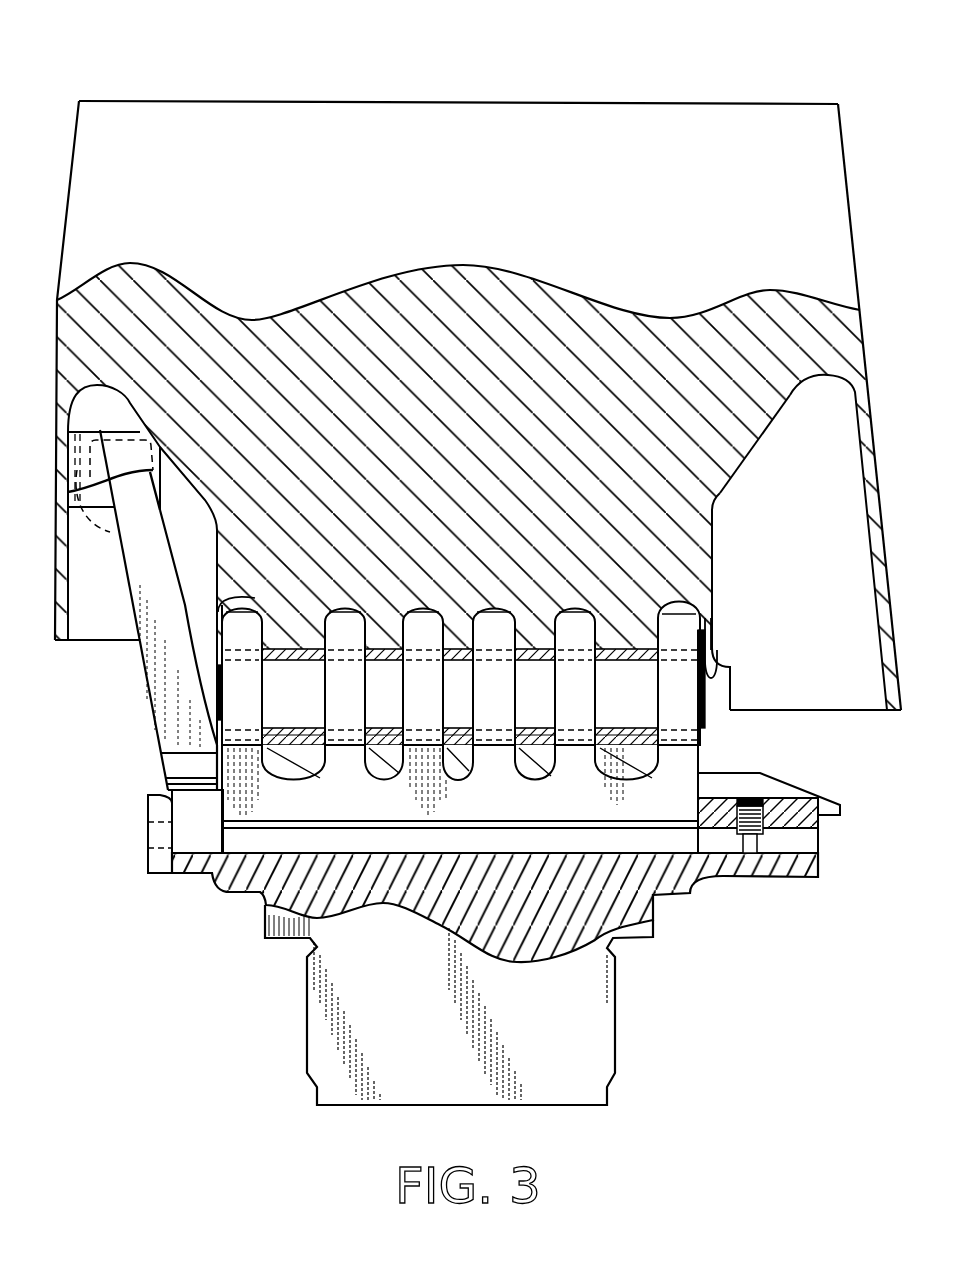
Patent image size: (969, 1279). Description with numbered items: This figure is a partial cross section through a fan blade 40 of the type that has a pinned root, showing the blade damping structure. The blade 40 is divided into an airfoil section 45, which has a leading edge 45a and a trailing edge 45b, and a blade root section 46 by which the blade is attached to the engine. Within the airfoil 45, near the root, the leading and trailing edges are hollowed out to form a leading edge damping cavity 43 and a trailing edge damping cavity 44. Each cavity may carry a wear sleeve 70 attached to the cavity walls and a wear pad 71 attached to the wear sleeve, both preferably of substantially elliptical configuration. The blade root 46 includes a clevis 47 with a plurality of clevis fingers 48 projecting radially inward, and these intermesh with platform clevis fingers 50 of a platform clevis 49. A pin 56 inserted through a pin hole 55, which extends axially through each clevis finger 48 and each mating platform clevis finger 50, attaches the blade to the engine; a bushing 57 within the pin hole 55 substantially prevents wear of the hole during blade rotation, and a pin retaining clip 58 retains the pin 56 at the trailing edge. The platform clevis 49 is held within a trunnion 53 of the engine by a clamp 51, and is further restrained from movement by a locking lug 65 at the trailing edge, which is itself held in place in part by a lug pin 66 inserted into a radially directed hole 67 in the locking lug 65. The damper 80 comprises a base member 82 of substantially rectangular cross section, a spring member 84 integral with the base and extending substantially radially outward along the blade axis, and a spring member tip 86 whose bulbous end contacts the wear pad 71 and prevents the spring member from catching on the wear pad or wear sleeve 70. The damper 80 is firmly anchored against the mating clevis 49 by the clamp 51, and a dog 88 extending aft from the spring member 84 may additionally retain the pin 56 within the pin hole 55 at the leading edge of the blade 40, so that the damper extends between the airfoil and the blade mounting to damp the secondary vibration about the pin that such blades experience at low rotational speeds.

The fan blade 40 is at (505, 164).
The leading edge damping cavity 43 is at (118, 612).
The trailing edge damping cavity 44 is at (846, 612).
The airfoil section 45 is at (74, 84).
The leading edge 45a is at (60, 262).
The trailing edge 45b is at (858, 290).
The blade root section 46 is at (726, 496).
The clevis 47 is at (640, 607).
The clevis fingers 48 is at (385, 757).
The platform clevis 49 is at (262, 830).
The platform clevis fingers 50 is at (259, 699).
The clamp 51 is at (157, 810).
The trunnion 53 is at (650, 915).
The pin hole 55 is at (251, 727).
The pin 56 is at (705, 718).
The bushing 57 is at (640, 746).
The pin retaining clip 58 is at (722, 681).
The locking lug 65 is at (816, 830).
The lug pin 66 is at (764, 822).
The radially directed hole 67 is at (735, 830).
The wear sleeve 70 is at (78, 425).
The wear pad 71 is at (109, 535).
The damper 80 is at (124, 732).
The base member 82 is at (208, 832).
The spring member 84 is at (175, 650).
The spring member tip 86 is at (131, 490).
The dog 88 is at (214, 708).